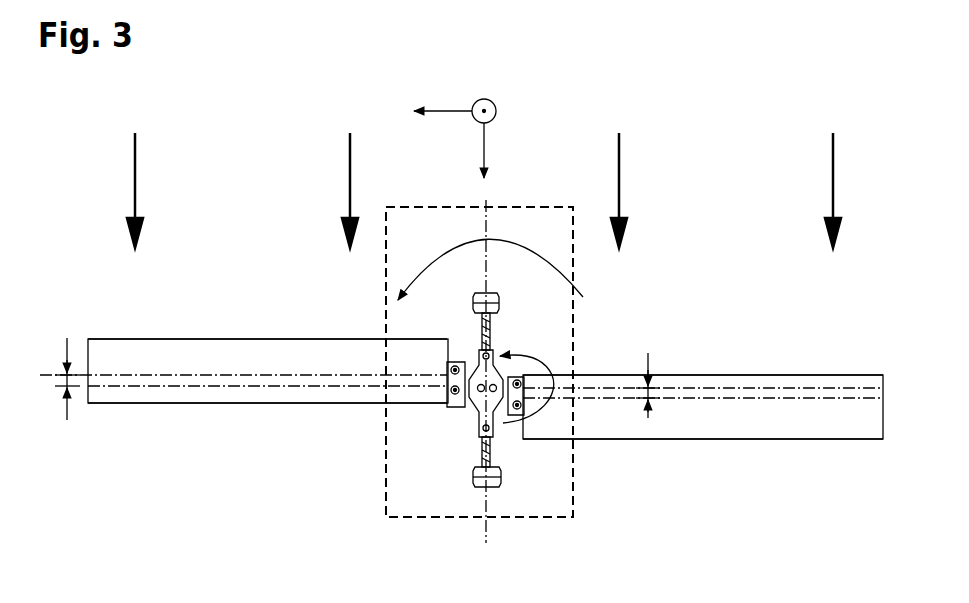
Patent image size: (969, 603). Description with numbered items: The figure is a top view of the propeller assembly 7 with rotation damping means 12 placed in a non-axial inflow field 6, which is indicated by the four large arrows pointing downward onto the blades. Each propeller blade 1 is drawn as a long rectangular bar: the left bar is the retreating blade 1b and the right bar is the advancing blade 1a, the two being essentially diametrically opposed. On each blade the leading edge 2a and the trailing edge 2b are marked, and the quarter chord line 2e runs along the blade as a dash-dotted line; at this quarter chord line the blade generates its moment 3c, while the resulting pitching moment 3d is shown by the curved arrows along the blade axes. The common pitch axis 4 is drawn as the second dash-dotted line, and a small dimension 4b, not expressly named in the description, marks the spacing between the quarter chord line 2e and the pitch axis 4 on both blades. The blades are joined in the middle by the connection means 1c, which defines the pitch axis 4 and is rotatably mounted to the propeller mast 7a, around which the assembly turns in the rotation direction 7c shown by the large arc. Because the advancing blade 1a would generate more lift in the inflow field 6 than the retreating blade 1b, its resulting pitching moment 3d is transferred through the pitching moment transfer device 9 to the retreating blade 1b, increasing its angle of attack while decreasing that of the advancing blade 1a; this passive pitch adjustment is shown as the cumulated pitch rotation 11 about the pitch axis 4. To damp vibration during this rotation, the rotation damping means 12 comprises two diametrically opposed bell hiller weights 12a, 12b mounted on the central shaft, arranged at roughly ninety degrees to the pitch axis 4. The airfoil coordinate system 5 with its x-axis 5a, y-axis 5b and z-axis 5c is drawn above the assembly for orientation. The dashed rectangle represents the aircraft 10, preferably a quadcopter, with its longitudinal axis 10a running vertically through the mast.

The propeller blade 1 is at (116, 332).
The advancing blade 1a is at (808, 425).
The retreating blade 1b is at (198, 358).
The connection means 1c is at (467, 410).
The leading edge 2a is at (140, 407).
The trailing edge 2b is at (241, 336).
The quarter chord line 2e is at (140, 375).
The moment 3c is at (266, 379).
The resulting pitching moment 3d is at (345, 386).
The common pitch axis 4 is at (210, 386).
The axis offset 4b is at (62, 382).
The airfoil coordinate system 5 is at (491, 110).
The x-axis 5a is at (482, 143).
The y-axis 5b is at (440, 107).
The z-axis 5c is at (490, 116).
The non-axial inflow field 6 is at (131, 165).
The propeller assembly 7 is at (765, 455).
The propeller mast 7a is at (470, 377).
The rotation direction 7c is at (533, 248).
The pitching moment transfer device 9 is at (458, 410).
The aircraft 10 is at (408, 519).
The longitudinal axis 10a is at (486, 533).
The cumulated pitch rotation 11 is at (537, 357).
The rotation damping means 12 is at (479, 420).
The bell hiller weight 12a is at (473, 303).
The bell hiller weight 12b is at (501, 475).